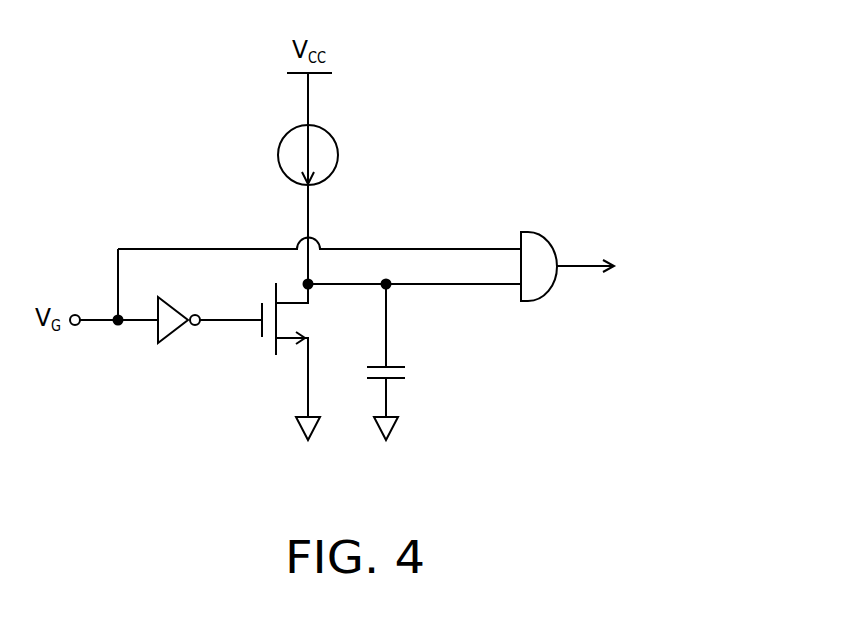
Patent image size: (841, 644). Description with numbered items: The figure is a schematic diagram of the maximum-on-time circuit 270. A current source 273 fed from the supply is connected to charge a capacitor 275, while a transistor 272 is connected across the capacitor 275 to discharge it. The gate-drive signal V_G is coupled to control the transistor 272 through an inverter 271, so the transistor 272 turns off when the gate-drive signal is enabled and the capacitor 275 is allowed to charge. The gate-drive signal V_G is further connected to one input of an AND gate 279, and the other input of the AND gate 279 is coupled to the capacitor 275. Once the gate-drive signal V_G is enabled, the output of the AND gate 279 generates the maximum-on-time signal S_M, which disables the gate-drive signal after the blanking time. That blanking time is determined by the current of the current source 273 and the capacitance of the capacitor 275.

The maximum-on-time circuit 270 is at (683, 177).
The inverter 271 is at (173, 323).
The transistor 272 is at (292, 355).
The current source 273 is at (337, 157).
The capacitor 275 is at (410, 362).
The AND gate 279 is at (543, 278).